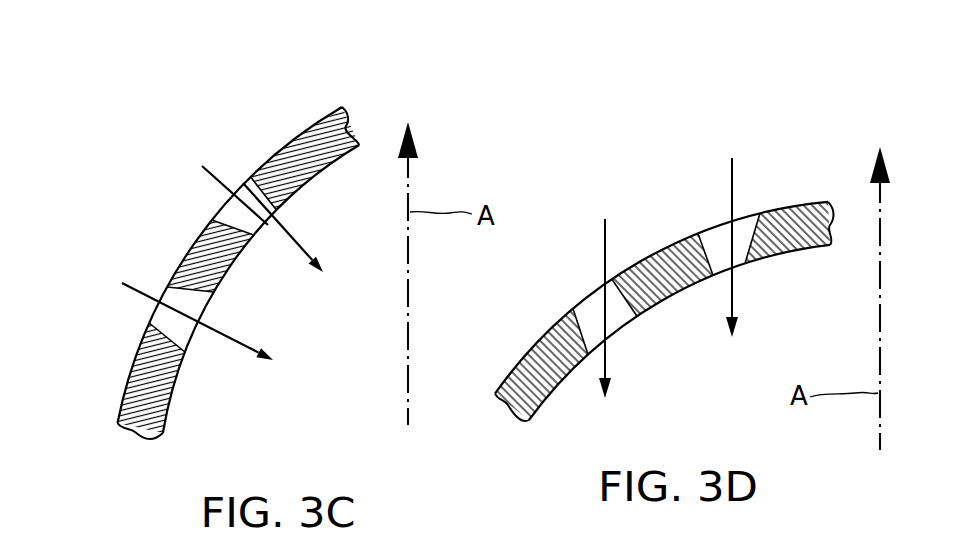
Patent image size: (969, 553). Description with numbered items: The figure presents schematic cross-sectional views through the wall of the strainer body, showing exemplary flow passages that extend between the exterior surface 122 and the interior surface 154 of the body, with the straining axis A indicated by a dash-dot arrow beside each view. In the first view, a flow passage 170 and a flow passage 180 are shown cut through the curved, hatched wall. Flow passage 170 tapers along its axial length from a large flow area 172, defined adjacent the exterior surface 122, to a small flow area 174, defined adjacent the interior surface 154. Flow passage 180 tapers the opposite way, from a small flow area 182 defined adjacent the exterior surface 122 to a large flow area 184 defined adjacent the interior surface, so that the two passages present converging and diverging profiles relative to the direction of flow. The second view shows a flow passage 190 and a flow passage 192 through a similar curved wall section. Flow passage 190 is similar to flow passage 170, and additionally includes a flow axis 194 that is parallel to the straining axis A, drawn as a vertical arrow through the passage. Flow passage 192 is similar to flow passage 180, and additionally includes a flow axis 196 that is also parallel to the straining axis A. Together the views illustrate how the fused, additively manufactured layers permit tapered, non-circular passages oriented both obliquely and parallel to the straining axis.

In FIG. 3C, the exterior surface 122 is at (289, 143).
In FIG. 3C, the interior surface 154 is at (318, 178).
In FIG. 3C, the flow passage 170 is at (250, 193).
In FIG. 3C, the large flow area 172 is at (201, 197).
In FIG. 3C, the small flow area 174 is at (272, 247).
In FIG. 3C, the flow passage 180 is at (170, 320).
In FIG. 3C, the small flow area 182 is at (144, 276).
In FIG. 3C, the large flow area 184 is at (212, 349).
In FIG. 3D, the flow passage 190 is at (718, 237).
In FIG. 3D, the flow passage 192 is at (595, 308).
In FIG. 3D, the flow axis 194 is at (733, 287).
In FIG. 3D, the flow axis 196 is at (608, 360).